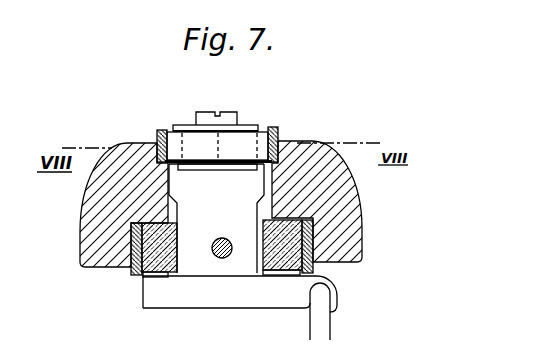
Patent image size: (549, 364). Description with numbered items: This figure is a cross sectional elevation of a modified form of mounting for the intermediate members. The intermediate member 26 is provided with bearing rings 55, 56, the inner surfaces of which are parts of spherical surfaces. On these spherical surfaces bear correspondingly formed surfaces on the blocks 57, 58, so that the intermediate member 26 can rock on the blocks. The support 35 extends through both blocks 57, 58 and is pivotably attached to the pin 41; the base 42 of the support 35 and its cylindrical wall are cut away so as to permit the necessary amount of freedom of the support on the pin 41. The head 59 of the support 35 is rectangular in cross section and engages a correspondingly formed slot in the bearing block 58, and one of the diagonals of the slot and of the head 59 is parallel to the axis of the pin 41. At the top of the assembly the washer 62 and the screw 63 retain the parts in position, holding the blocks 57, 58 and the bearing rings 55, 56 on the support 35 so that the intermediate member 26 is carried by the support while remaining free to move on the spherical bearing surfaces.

The intermediate member 26 is at (347, 198).
The support 35 is at (207, 258).
The pin 41 is at (218, 256).
The base 42 is at (245, 290).
The bearing ring 55 is at (133, 267).
The bearing ring 56 is at (278, 132).
The block 57 is at (176, 237).
The bearing block 58 is at (243, 147).
The head 59 is at (198, 150).
The washer 62 is at (193, 128).
The screw 63 is at (230, 118).